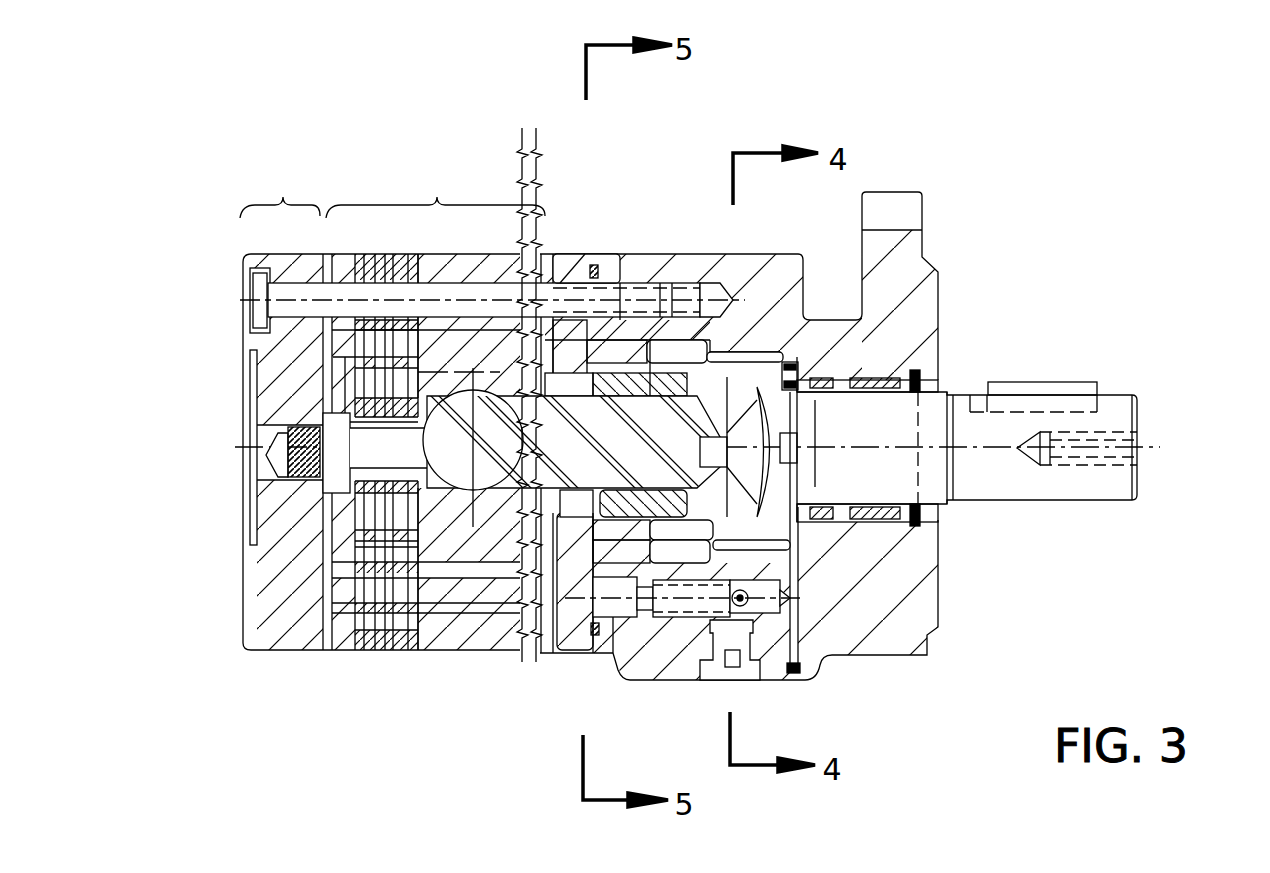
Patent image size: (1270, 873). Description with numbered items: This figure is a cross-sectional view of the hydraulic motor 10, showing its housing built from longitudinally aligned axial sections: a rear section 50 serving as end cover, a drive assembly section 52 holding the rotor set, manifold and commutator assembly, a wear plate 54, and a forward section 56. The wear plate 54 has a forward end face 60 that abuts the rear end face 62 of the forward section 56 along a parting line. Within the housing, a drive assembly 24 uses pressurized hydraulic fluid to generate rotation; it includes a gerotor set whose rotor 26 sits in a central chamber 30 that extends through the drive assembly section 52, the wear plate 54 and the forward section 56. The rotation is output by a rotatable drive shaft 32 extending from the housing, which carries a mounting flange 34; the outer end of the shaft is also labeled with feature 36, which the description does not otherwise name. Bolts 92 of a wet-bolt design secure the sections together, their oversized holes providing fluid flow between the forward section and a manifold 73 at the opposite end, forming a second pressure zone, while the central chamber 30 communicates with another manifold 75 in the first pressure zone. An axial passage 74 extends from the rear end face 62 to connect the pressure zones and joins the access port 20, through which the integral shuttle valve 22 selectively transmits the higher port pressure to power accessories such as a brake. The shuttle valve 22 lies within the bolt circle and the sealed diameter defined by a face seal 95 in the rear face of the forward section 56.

The hydraulic motor 10 is at (1082, 258).
The access port 20 is at (743, 678).
The shuttle valve 22 is at (713, 628).
The drive assembly 24 is at (667, 386).
The rotor 26 is at (447, 538).
The central chamber 30 is at (633, 388).
The drive shaft 32 is at (1080, 487).
The mounting flange 34 is at (902, 206).
The threaded bore 36 is at (1150, 448).
The rear section 50 is at (280, 188).
The drive assembly section 52 is at (435, 187).
The wear plate 54 is at (567, 265).
The forward section 56 is at (688, 262).
The forward end face 60 is at (572, 630).
The rear end face 62 is at (598, 642).
The manifold 73 is at (333, 573).
The passage 74 is at (630, 620).
The manifold 75 is at (323, 497).
The bolts 92 is at (257, 308).
The face seal 95 is at (592, 270).